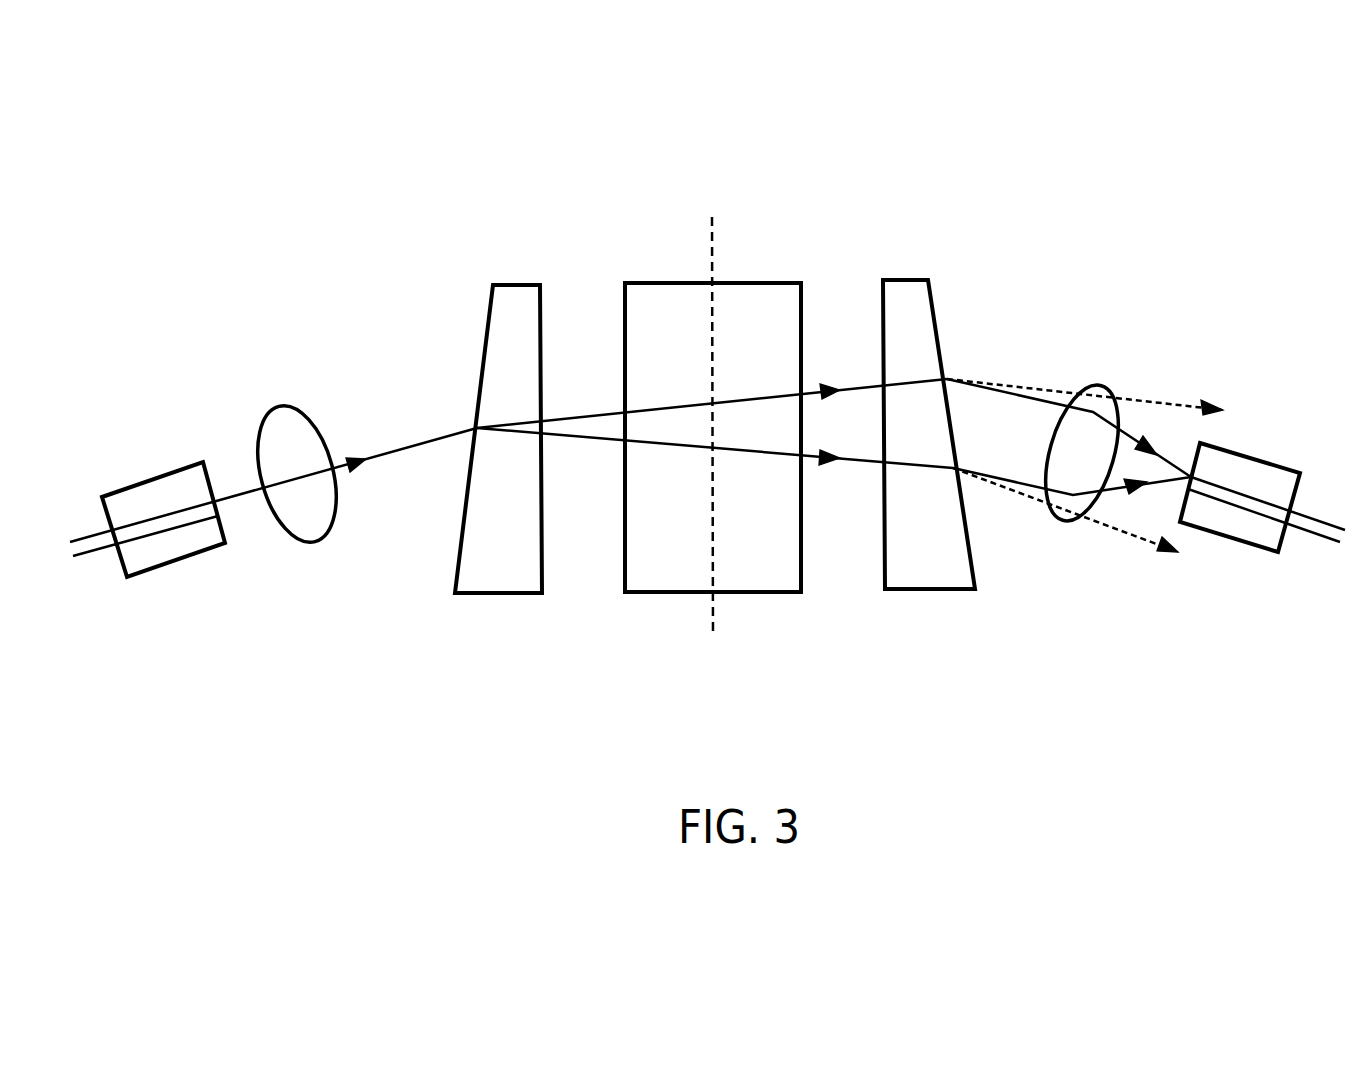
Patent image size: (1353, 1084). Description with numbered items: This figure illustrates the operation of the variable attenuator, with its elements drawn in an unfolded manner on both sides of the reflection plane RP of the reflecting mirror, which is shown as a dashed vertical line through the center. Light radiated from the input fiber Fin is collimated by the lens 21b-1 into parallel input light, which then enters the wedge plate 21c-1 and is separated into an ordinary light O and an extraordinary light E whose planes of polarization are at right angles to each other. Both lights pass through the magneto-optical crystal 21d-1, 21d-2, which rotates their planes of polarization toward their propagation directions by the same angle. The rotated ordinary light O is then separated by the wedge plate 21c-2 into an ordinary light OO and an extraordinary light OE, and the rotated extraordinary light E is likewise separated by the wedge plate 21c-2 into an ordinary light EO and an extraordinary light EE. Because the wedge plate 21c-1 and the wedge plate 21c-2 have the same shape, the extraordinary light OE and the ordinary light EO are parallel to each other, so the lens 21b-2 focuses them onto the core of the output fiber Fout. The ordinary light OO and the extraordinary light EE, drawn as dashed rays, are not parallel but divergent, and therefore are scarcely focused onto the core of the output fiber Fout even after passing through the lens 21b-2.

The lens 21b-1 is at (317, 543).
The lens 21b-2 is at (1058, 523).
The wedge plate 21c-1 is at (513, 593).
The wedge plate 21c-2 is at (923, 590).
The magneto-optical crystal 21d-1 is at (677, 593).
The magneto-optical crystal 21d-2 is at (762, 593).
The input fiber Fin is at (92, 552).
The output fiber Fout is at (1310, 530).
The reflection plane RP is at (708, 407).
The ordinary light O is at (712, 397).
The extraordinary light E is at (715, 458).
The extraordinary light OE is at (1069, 428).
The ordinary light EO is at (1072, 467).
The ordinary light OO is at (1167, 402).
The extraordinary light EE is at (1112, 530).